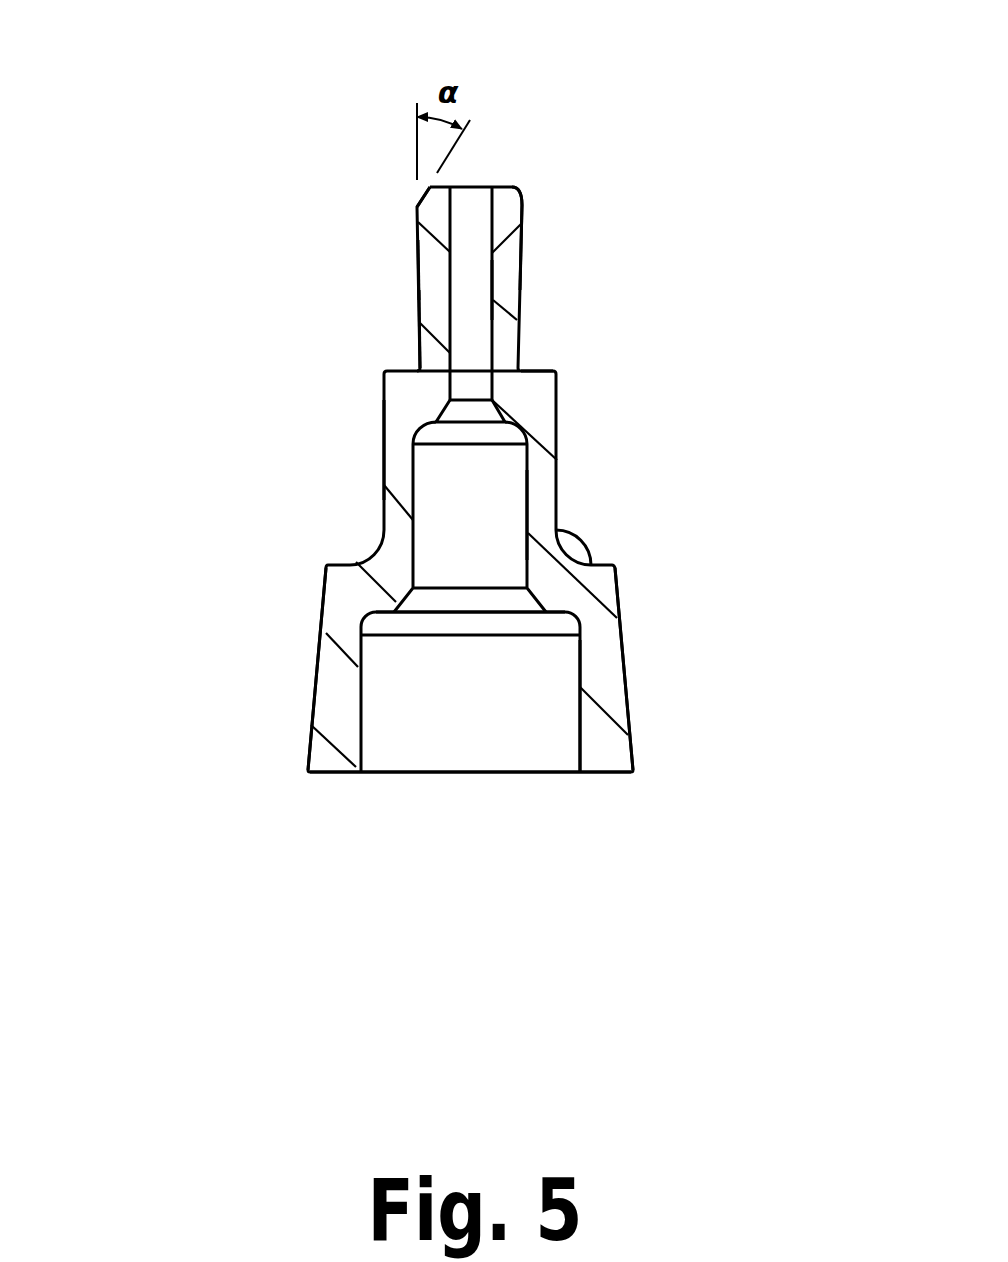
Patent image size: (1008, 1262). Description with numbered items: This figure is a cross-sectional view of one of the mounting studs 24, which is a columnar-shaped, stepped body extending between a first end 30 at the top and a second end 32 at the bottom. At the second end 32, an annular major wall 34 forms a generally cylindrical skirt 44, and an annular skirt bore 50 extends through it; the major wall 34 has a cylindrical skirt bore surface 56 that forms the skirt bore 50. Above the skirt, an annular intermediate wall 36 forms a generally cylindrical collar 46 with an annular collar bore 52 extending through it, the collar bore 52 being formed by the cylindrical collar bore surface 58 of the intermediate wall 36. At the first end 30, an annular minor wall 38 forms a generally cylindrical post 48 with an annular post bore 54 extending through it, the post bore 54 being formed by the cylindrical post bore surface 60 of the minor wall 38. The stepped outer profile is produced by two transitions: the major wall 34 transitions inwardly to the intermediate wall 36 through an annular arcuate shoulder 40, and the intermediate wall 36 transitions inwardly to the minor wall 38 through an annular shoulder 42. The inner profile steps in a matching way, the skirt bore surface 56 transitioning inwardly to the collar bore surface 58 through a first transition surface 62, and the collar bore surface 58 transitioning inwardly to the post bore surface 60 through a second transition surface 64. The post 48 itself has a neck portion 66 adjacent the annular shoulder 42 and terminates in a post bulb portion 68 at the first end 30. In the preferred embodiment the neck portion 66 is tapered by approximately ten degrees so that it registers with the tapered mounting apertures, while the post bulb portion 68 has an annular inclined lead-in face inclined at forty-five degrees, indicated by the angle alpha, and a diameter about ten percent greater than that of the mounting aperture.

The mounting stud 24 is at (641, 432).
The first end 30 is at (519, 182).
The second end 32 is at (599, 779).
The major wall 34 is at (606, 699).
The intermediate wall 36 is at (537, 470).
The minor wall 38 is at (505, 288).
The arcuate shoulder 40 is at (593, 555).
The annular shoulder 42 is at (538, 367).
The skirt 44 is at (335, 688).
The collar 46 is at (400, 447).
The post 48 is at (433, 270).
The skirt bore 50 is at (452, 692).
The collar bore 52 is at (462, 520).
The post bore 54 is at (473, 313).
The skirt bore surface 56 is at (585, 715).
The collar bore surface 58 is at (527, 523).
The post bore surface 60 is at (522, 223).
The first transition surface 62 is at (570, 613).
The second transition surface 64 is at (510, 410).
The neck portion 66 is at (420, 302).
The post bulb portion 68 is at (417, 207).